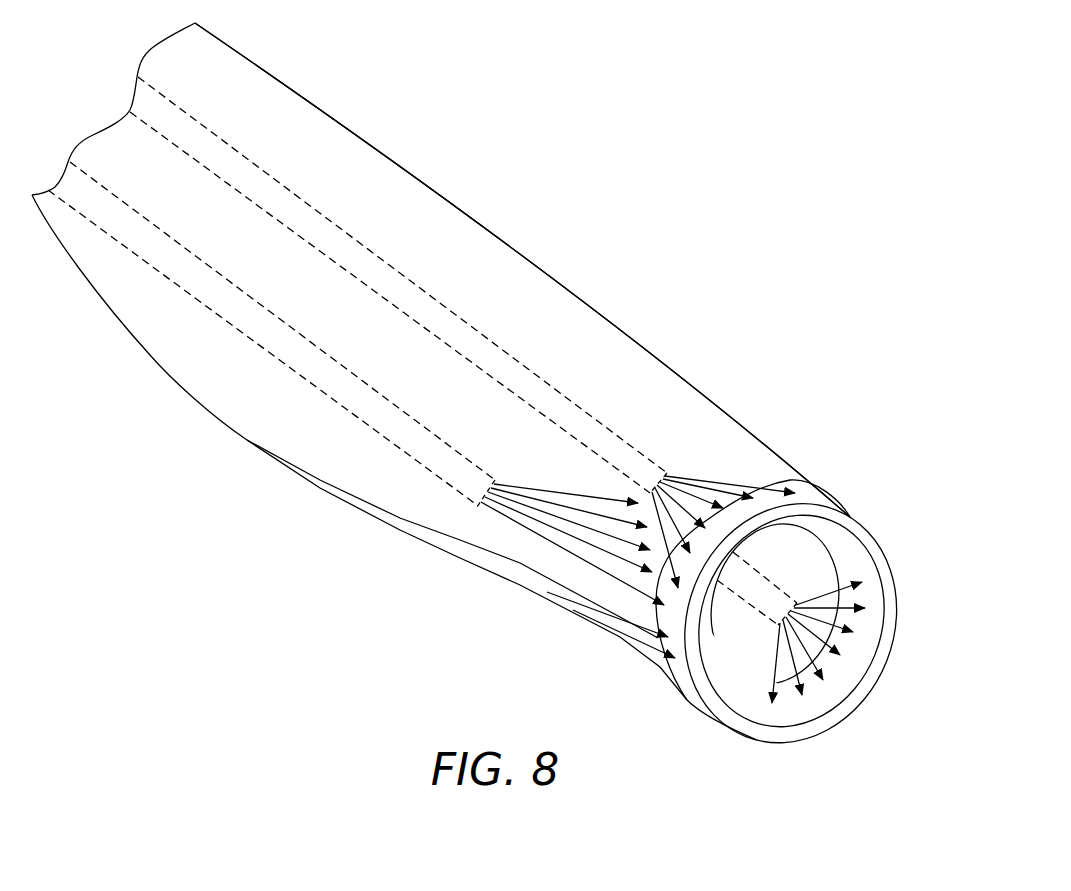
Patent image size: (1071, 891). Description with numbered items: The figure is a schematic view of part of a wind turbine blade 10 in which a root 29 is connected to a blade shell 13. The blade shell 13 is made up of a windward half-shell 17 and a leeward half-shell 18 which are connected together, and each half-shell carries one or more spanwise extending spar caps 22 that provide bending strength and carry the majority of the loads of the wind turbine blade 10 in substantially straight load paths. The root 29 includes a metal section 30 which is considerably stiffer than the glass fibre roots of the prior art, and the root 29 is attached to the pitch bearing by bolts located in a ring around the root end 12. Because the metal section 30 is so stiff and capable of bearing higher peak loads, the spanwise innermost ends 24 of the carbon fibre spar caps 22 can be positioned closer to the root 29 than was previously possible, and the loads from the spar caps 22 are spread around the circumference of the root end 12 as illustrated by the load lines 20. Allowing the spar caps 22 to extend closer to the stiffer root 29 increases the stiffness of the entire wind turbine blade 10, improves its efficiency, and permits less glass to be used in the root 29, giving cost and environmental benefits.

The wind turbine blade 10 is at (463, 92).
The root end 12 is at (886, 557).
The blade shell 13 is at (315, 117).
The windward half-shell 17 is at (484, 240).
The leeward half-shell 18 is at (523, 580).
The load lines 20 is at (641, 648).
The spar caps 22 is at (212, 170).
The ends of the spar caps 24 is at (472, 462).
The root 29 is at (792, 480).
The metal section 30 is at (836, 542).